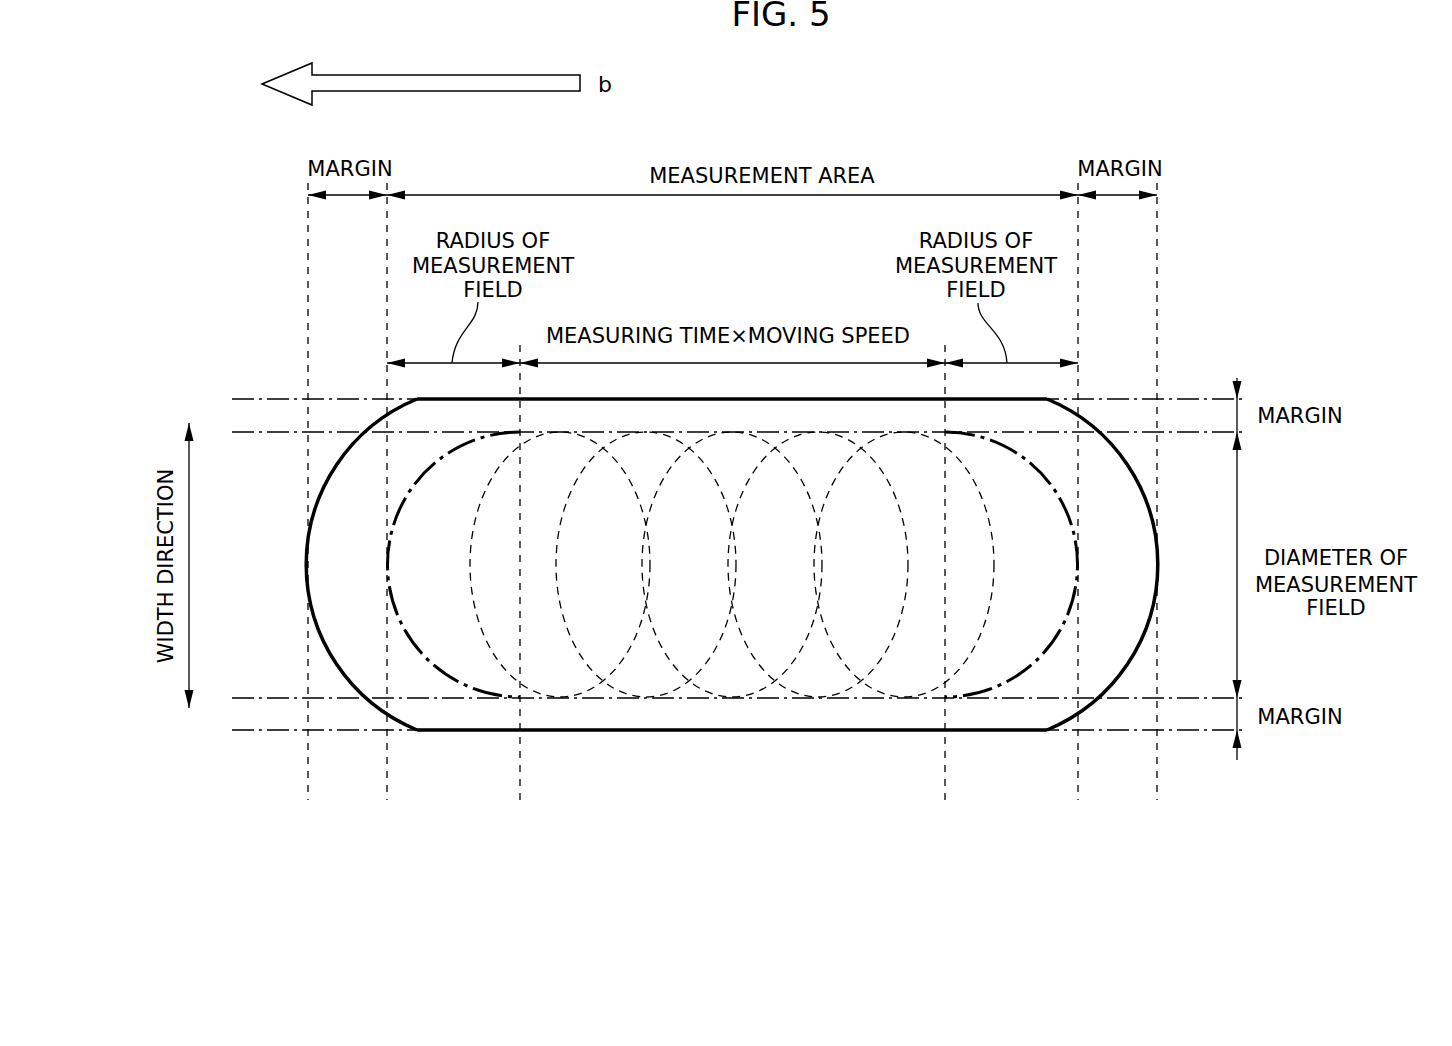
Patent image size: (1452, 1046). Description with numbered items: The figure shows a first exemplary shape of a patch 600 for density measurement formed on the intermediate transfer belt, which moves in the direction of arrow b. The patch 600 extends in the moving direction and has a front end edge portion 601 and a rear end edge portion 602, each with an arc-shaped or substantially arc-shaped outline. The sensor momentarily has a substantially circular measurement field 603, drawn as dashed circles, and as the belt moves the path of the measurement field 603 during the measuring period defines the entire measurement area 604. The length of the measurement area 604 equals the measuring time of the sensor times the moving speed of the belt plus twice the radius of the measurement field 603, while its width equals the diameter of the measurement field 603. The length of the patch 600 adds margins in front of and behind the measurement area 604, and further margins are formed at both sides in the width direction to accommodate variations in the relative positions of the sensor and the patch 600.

The patch 600 is at (1032, 398).
The front end edge portion 601 is at (358, 432).
The rear end edge portion 602 is at (1135, 465).
The measurement field 603 is at (575, 432).
The measurement area 604 is at (1033, 452).